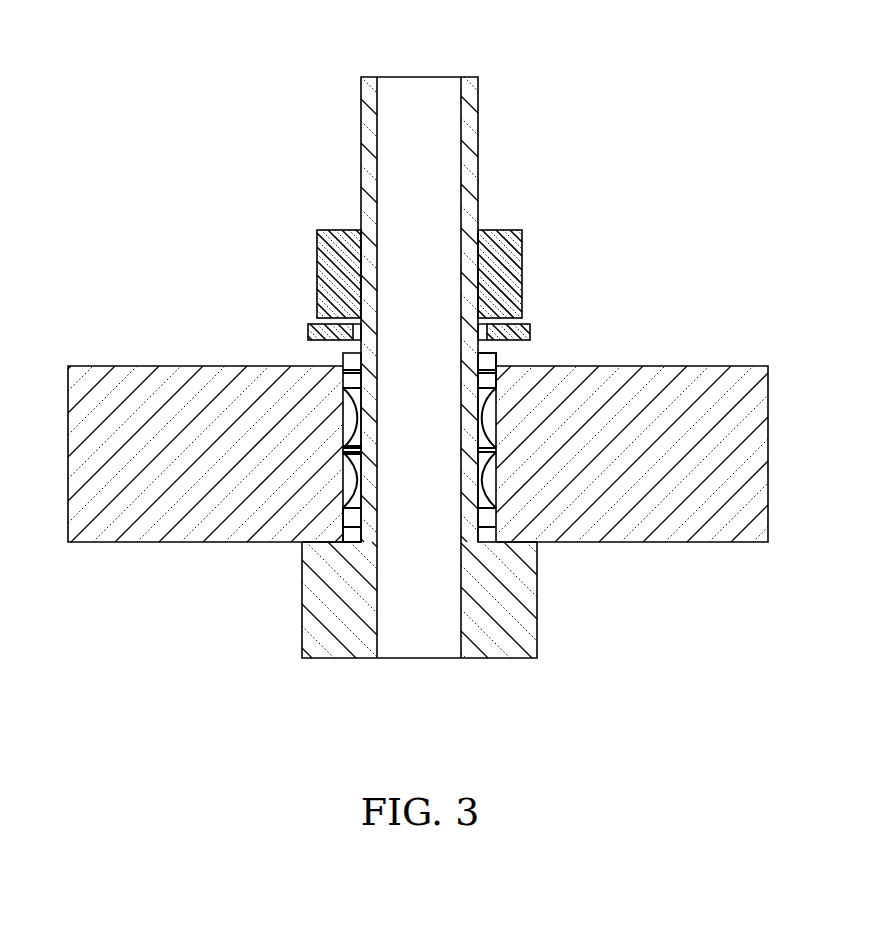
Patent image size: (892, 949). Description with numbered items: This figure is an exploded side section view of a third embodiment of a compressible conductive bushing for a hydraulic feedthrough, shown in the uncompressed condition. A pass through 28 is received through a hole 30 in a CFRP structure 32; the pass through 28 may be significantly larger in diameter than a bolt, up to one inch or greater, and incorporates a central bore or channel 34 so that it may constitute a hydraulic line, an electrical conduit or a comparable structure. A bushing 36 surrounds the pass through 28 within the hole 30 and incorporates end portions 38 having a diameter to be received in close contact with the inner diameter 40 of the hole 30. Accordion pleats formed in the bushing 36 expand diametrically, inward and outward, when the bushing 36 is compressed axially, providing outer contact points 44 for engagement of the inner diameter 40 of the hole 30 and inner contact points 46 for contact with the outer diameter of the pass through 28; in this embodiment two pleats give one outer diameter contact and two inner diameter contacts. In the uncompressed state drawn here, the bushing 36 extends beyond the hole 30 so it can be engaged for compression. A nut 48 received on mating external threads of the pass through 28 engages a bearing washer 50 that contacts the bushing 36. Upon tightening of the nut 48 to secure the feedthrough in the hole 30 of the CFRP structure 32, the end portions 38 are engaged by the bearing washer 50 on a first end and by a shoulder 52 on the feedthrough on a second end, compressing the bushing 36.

The pass through 28 is at (468, 155).
The hole 30 is at (497, 410).
The CFRP structure 32 is at (727, 420).
The central bore or channel 34 is at (403, 113).
The bushing 36 is at (497, 485).
The end portions 38 is at (497, 356).
The inner diameter 40 is at (343, 417).
The outer contact points 44 is at (343, 450).
The inner contact points 46 is at (358, 478).
The nut 48 is at (478, 347).
The bearing washer 50 is at (308, 335).
The shoulder 52 is at (512, 545).